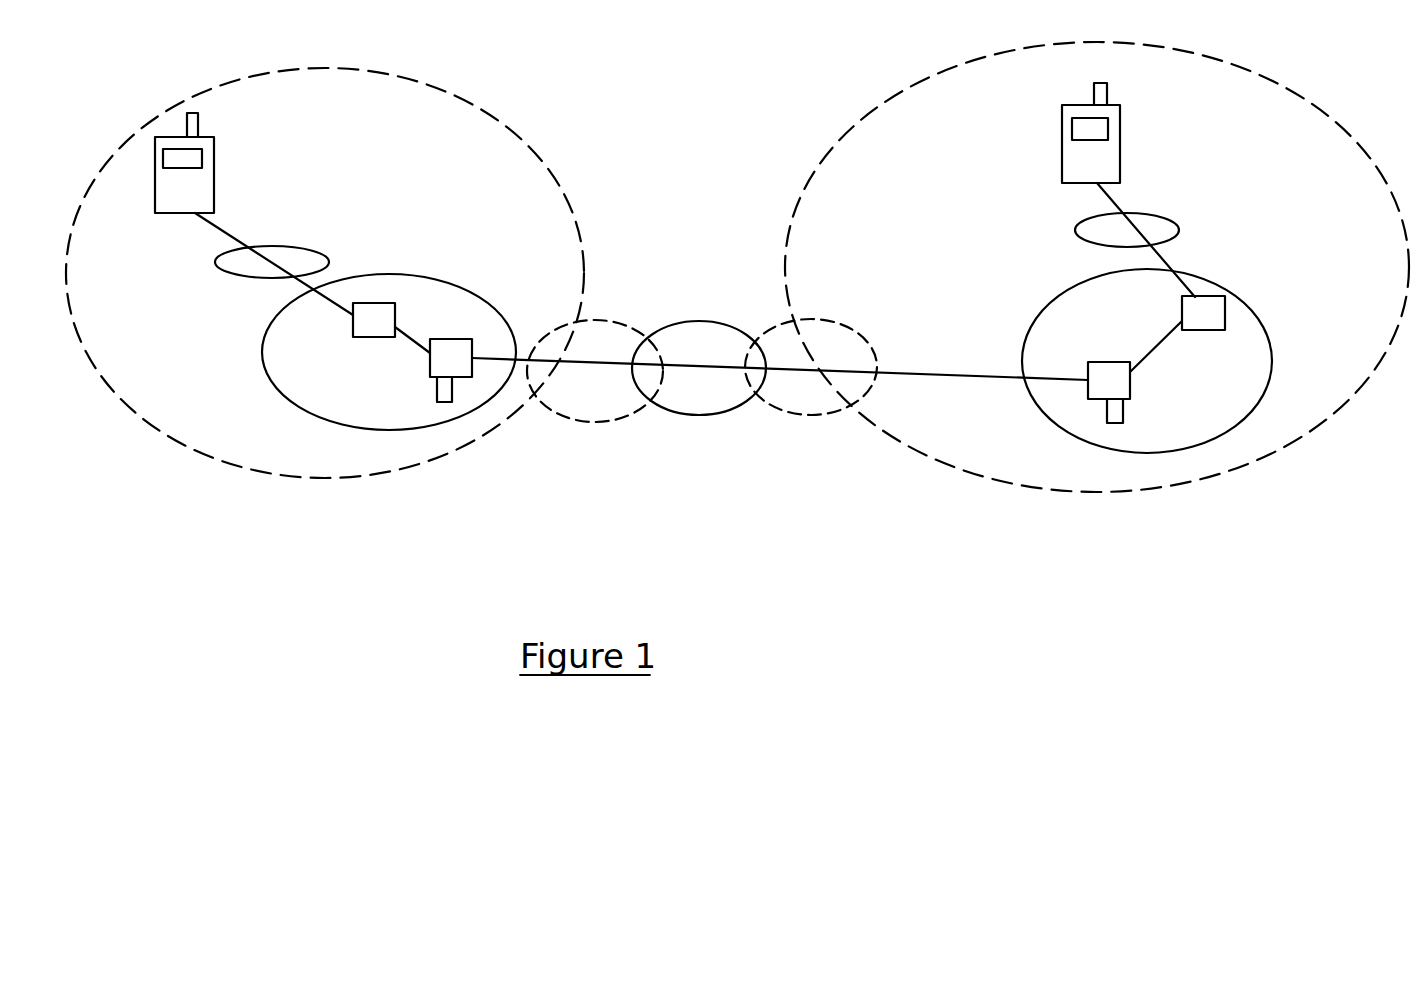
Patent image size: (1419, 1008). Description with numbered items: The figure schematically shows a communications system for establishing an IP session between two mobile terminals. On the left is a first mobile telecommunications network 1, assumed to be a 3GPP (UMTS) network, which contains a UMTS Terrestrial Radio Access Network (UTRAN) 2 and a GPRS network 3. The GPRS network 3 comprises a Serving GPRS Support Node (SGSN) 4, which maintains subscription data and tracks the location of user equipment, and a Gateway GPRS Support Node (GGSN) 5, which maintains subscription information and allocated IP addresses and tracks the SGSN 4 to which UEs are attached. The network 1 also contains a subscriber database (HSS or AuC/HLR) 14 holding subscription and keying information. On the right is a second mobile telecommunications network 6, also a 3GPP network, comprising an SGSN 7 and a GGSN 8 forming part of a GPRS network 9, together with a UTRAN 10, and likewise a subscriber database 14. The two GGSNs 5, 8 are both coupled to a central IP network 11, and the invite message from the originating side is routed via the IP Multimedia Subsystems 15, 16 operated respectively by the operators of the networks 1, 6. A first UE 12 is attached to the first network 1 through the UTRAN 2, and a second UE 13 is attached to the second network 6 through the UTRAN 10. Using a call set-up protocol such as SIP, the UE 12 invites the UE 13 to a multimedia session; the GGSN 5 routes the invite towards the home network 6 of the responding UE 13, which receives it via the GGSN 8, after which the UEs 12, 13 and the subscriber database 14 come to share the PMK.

The mobile telecommunications network 1 is at (420, 456).
The UMTS Terrestrial Radio Access Network 2 is at (318, 247).
The GPRS network 3 is at (440, 278).
The Serving GPRS Support Node 4 is at (373, 337).
The Gateway GPRS Support Node 5 is at (447, 339).
The second mobile telecommunications network 6 is at (1232, 456).
The Serving GPRS Support Node 7 is at (1217, 330).
The Gateway GPRS Support Node 8 is at (1105, 362).
The GPRS network 9 is at (1247, 297).
The UMTS Terrestrial Radio Access Network 10 is at (1075, 232).
The IP network 11 is at (713, 400).
The user equipment 12 is at (214, 193).
The user equipment 13 is at (1120, 157).
The subscriber database 14 is at (436, 393).
The IP Multimedia Subsystem 15 is at (590, 413).
The IP Multimedia Subsystem 16 is at (763, 337).